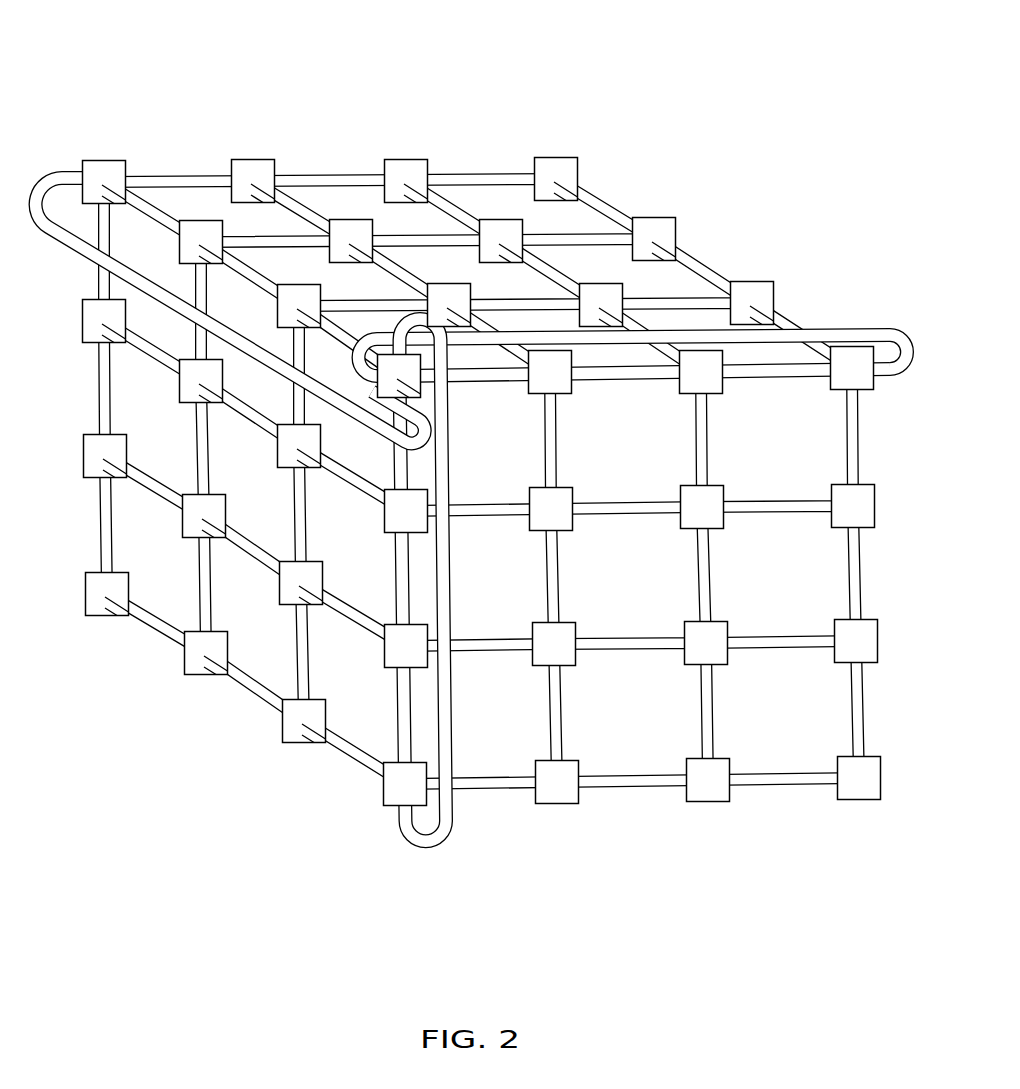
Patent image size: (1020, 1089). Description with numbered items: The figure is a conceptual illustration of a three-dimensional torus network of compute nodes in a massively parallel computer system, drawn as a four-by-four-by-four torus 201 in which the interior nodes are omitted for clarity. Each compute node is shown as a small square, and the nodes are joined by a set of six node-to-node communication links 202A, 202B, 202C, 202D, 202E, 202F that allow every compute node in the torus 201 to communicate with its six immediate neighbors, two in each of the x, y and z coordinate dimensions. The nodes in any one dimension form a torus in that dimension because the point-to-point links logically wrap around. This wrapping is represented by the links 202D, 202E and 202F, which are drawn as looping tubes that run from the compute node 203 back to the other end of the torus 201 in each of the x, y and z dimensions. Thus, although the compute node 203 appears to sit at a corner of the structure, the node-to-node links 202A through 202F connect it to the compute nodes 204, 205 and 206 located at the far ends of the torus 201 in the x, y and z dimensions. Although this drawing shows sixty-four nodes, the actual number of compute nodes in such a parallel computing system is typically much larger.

The torus 201 is at (628, 80).
The node-to-node communication link 202A is at (470, 383).
The node-to-node communication link 202B is at (408, 465).
The node-to-node communication link 202C is at (343, 336).
The node-to-node communication link 202D is at (878, 328).
The node-to-node communication link 202E is at (427, 850).
The node-to-node communication link 202F is at (44, 166).
The compute node 203 is at (378, 396).
The compute node 204 is at (108, 162).
The compute node 205 is at (863, 377).
The compute node 206 is at (395, 797).